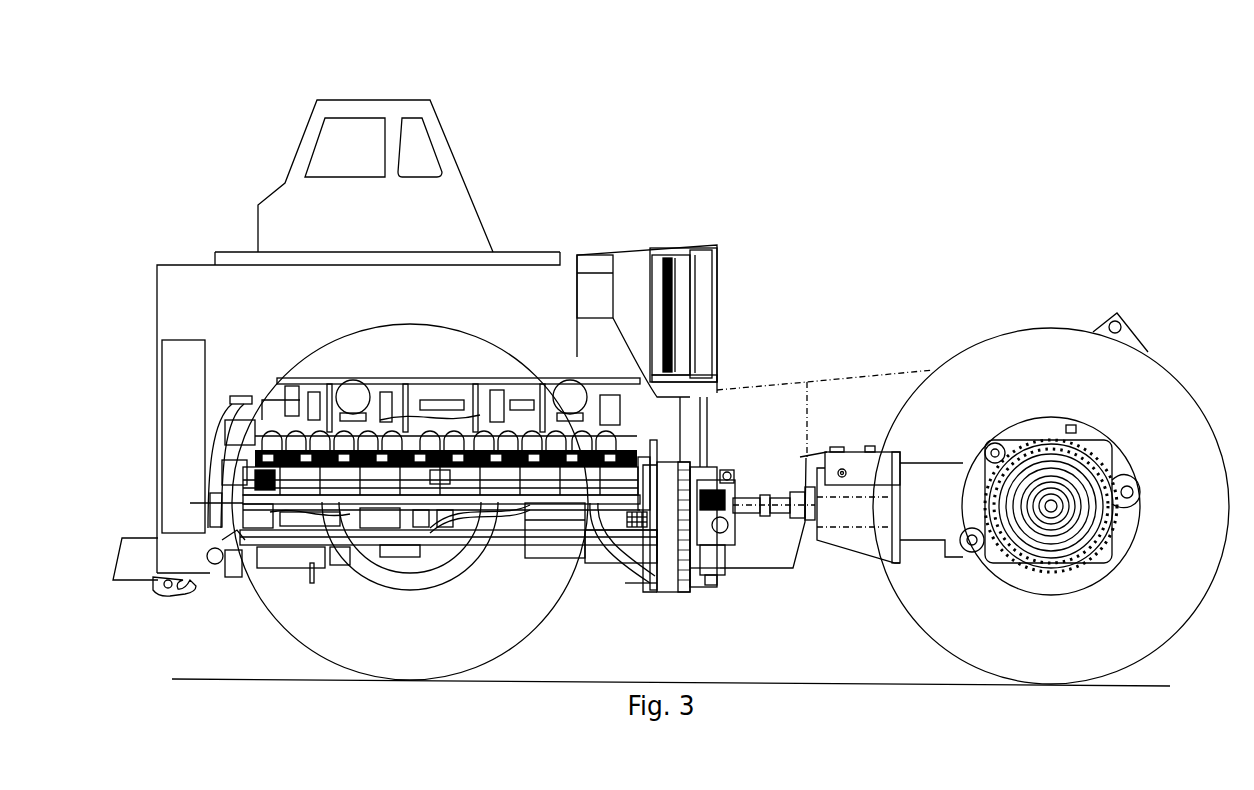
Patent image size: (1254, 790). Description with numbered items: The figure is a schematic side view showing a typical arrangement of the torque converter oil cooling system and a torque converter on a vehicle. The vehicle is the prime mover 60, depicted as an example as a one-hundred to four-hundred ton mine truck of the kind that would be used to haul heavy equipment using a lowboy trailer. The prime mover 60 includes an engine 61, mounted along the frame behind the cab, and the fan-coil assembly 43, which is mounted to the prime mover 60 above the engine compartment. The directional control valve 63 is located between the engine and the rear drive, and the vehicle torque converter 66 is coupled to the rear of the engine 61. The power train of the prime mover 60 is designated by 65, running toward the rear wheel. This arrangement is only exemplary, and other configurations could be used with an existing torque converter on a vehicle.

The prime mover 60 is at (405, 100).
The fan-coil assembly 43 is at (718, 298).
The engine 61 is at (285, 567).
The directional control valve 63 is at (730, 470).
The power train 65 is at (767, 567).
The vehicle torque converter 66 is at (670, 593).